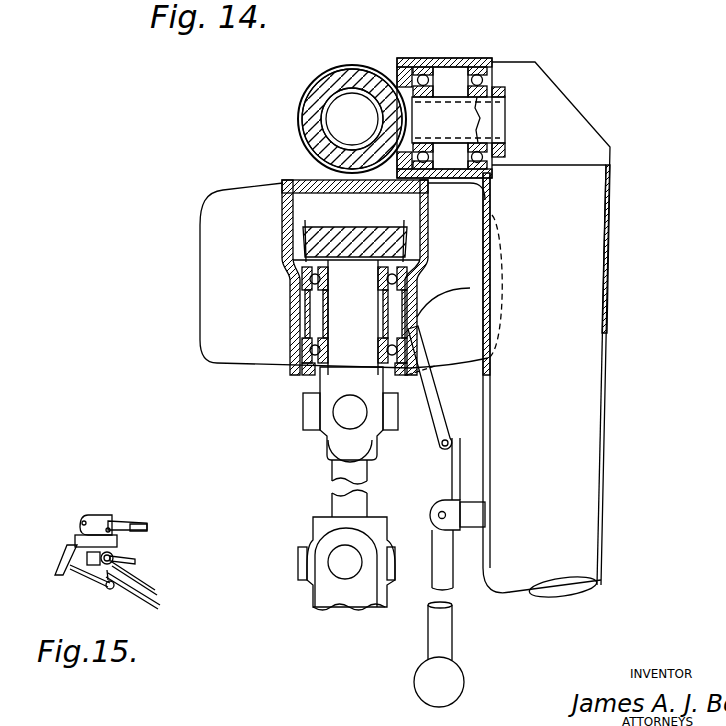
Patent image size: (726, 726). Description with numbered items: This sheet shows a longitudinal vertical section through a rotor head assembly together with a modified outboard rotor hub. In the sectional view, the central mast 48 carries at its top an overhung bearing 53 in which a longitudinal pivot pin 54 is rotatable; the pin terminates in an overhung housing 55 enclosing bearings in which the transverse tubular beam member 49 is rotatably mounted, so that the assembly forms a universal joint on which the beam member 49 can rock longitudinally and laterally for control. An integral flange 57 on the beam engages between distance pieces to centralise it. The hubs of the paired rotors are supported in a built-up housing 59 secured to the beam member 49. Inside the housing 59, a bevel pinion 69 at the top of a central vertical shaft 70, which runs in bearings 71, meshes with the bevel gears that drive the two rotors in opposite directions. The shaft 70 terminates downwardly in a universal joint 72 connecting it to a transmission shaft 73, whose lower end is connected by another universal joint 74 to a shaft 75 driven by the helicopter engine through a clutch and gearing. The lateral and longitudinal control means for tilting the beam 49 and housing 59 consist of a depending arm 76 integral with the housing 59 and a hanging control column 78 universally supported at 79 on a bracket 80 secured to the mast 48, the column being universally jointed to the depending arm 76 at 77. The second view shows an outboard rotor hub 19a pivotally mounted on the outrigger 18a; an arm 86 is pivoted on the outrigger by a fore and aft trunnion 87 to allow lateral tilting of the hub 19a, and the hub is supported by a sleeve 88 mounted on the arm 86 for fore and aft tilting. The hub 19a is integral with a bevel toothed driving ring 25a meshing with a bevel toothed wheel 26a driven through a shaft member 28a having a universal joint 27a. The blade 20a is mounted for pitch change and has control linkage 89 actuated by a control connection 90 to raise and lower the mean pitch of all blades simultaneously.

In FIG. 14, the central mast 48 is at (576, 428).
In FIG. 14, the transverse tubular beam member 49 is at (327, 110).
In FIG. 14, the overhung bearing 53 is at (478, 62).
In FIG. 14, the longitudinal pivot pin 54 is at (493, 93).
In FIG. 14, the overhung housing 55 is at (358, 68).
In FIG. 14, the integral flange 57 is at (307, 128).
In FIG. 14, the built-up housing 59 is at (290, 293).
In FIG. 14, the bevel pinion 69 is at (305, 237).
In FIG. 14, the central vertical shaft 70 is at (353, 277).
In FIG. 14, the bearings 71 is at (303, 303).
In FIG. 14, the universal joint 72 is at (355, 417).
In FIG. 14, the transmission shaft 73 is at (348, 498).
In FIG. 14, the universal joint 74 is at (338, 558).
In FIG. 14, the shaft 75 is at (348, 597).
In FIG. 14, the depending arm 76 is at (425, 398).
In FIG. 14, the universal joint 77 is at (440, 447).
In FIG. 14, the hanging control column 78 is at (452, 485).
In FIG. 14, the universal support 79 is at (442, 515).
In FIG. 14, the bracket 80 is at (470, 513).
In FIG. 15, the outrigger 18a is at (156, 594).
In FIG. 15, the rotor hub 19a is at (95, 515).
In FIG. 15, the rotor blade 20a is at (147, 526).
In FIG. 15, the bevel toothed driving ring 25a is at (112, 552).
In FIG. 15, the bevel toothed wheel 26a is at (66, 567).
In FIG. 15, the universal joint 27a is at (110, 590).
In FIG. 15, the shaft member 28a is at (158, 607).
In FIG. 15, the arm 86 is at (135, 562).
In FIG. 15, the fore and aft trunnion 87 is at (108, 573).
In FIG. 15, the sleeve 88 is at (93, 565).
In FIG. 15, the control linkage 89 is at (114, 524).
In FIG. 15, the control connection 90 is at (140, 578).